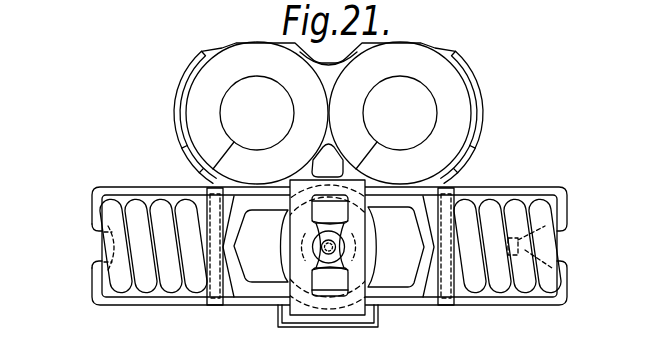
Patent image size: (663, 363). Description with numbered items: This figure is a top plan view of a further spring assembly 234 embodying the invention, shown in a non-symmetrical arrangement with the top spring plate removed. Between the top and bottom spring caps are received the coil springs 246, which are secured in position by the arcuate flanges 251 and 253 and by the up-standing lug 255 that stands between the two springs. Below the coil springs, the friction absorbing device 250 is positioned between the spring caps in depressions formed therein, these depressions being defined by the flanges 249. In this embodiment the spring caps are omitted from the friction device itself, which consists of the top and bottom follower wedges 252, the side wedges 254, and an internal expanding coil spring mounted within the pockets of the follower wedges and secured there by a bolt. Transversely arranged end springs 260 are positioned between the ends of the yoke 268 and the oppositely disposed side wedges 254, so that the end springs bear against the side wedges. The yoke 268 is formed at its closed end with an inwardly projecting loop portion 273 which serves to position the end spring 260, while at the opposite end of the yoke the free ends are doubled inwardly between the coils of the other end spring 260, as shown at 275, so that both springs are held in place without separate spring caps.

The coil springs 246 is at (198, 100).
The arcuate flange 253 is at (185, 123).
The arcuate flange 251 is at (327, 66).
The up-standing lug 255 is at (323, 163).
The yoke 268 is at (527, 305).
The end springs 260 is at (112, 211).
The inwardly projecting loop portion 273 is at (104, 241).
The doubled-in free ends of the yoke 275 is at (523, 247).
The top and bottom follower wedges 252 is at (253, 257).
The side wedges 254 is at (436, 214).
The friction absorbing device 250 is at (373, 287).
The spring assembly 234 is at (441, 191).
The flanges 249 is at (283, 325).